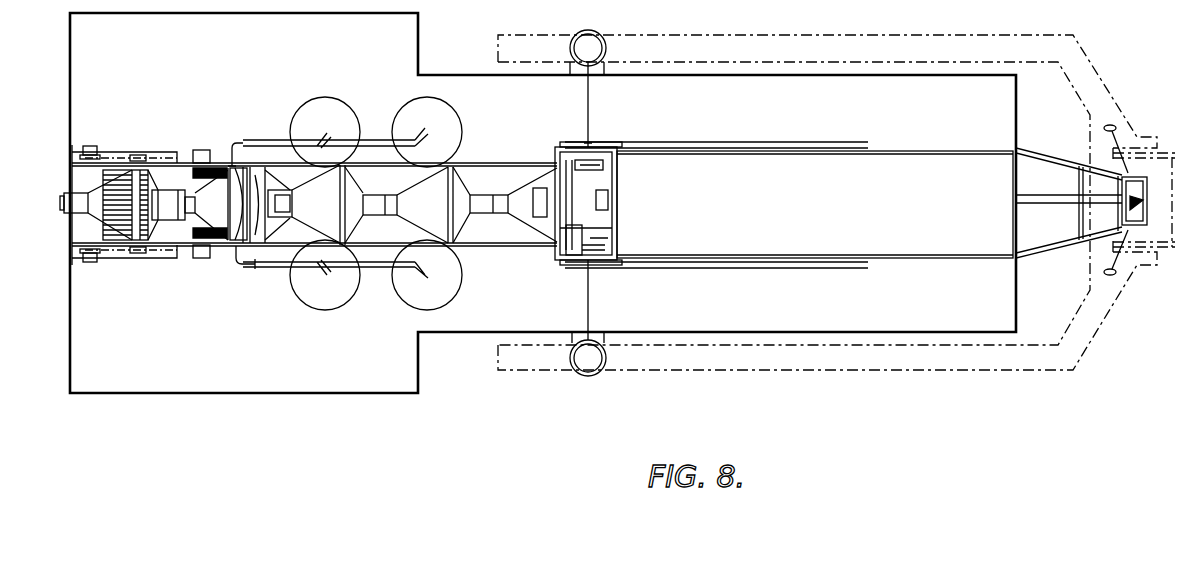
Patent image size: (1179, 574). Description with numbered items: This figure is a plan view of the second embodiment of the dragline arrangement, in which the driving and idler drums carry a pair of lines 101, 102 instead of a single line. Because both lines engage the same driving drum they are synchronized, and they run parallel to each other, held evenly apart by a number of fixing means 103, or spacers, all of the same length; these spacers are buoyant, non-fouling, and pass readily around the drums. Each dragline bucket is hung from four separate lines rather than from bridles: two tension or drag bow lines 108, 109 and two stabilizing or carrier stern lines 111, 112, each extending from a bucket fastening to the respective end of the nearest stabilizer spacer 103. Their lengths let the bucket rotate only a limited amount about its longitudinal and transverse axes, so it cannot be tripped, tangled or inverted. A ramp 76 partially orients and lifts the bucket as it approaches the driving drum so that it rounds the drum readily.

The ramp 76 is at (545, 188).
The line 101 is at (485, 247).
The line 102 is at (462, 167).
The fixing means 103 is at (358, 178).
The tension or drag bow line 108 is at (318, 176).
The tension or drag bow line 109 is at (300, 213).
The stabilizing or carrier stern line 111 is at (263, 172).
The stabilizing or carrier stern line 112 is at (263, 228).